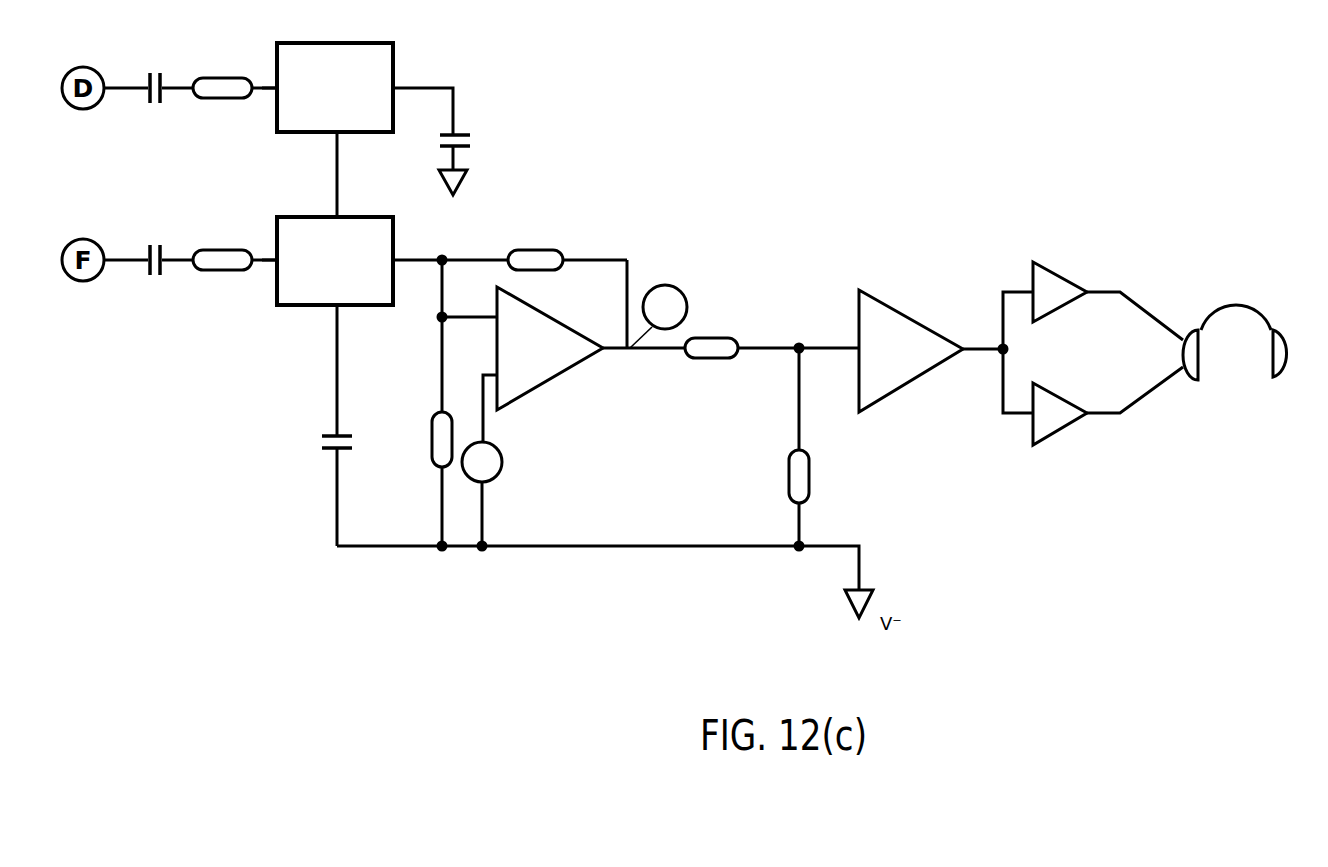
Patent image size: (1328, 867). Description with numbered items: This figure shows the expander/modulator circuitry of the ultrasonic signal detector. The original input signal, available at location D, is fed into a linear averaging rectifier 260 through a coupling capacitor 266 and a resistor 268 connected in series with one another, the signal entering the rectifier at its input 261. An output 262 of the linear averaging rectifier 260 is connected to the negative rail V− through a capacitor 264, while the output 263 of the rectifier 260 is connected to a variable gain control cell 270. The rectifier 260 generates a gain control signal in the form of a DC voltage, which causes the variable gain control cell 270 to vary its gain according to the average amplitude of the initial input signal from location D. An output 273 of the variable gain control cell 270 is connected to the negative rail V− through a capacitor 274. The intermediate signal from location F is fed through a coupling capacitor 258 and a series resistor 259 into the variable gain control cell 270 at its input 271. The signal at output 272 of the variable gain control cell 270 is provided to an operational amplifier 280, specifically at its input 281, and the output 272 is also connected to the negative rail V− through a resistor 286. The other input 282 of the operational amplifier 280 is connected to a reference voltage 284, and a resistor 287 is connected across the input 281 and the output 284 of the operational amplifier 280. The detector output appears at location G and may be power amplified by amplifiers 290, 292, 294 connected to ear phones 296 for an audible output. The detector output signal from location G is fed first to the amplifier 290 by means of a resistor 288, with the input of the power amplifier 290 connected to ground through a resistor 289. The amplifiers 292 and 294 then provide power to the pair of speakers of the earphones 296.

The coupling capacitor 258 is at (150, 277).
The resistor 259 is at (216, 271).
The linear averaging rectifier 260 is at (368, 43).
The LAR input 261 is at (275, 85).
The output of linear averaging rectifier 262 is at (393, 88).
The output of rectifier 263 is at (338, 133).
The capacitor 264 is at (463, 147).
The coupling capacitor 266 is at (155, 104).
The resistor 268 is at (216, 99).
The variable gain control cell 270 is at (283, 307).
The input of variable gain control cell 271 is at (275, 253).
The output of variable gain control cell 272 is at (393, 260).
The output of variable gain control cell 273 is at (335, 308).
The capacitor 274 is at (327, 453).
The operational amplifier 280 is at (553, 378).
The input of operational amplifier 281 is at (493, 313).
The input of operational amplifier 282 is at (493, 373).
The reference voltage 284 is at (488, 482).
The resistor 286 is at (440, 468).
The resistor 287 is at (540, 250).
The resistor 288 is at (707, 340).
The resistor 289 is at (810, 490).
The amplifier 290 is at (912, 312).
The amplifier 292 is at (1062, 275).
The amplifier 294 is at (1057, 432).
The ear phones 296 is at (1280, 377).